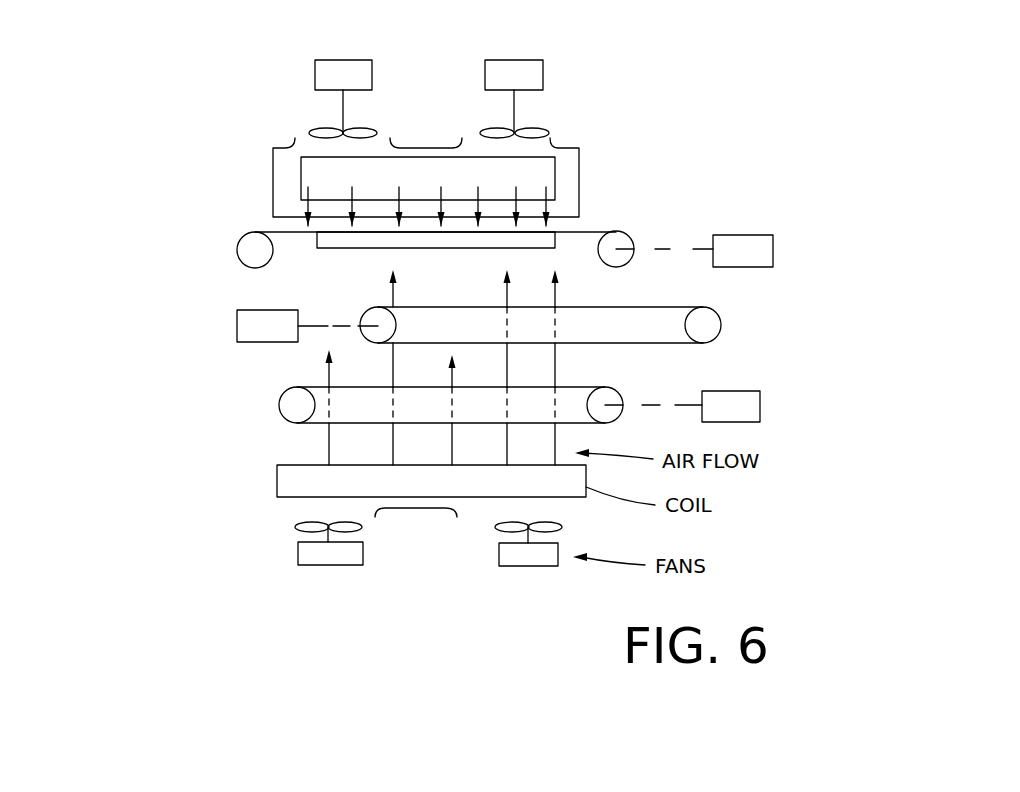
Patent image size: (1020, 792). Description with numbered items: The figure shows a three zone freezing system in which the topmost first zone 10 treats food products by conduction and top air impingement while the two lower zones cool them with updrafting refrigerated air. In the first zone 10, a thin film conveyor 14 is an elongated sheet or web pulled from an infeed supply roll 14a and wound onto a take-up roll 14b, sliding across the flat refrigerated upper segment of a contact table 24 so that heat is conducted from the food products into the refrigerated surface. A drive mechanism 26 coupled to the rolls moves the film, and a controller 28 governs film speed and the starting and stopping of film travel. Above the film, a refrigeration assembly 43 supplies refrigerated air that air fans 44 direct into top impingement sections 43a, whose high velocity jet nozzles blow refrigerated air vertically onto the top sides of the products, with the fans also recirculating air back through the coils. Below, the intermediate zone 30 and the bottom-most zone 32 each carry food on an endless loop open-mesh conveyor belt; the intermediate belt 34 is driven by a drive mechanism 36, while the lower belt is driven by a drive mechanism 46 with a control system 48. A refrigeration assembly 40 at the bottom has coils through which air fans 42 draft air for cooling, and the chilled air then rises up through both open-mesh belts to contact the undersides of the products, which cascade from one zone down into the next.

The first zone 10 is at (196, 246).
The thin film conveyor 14 is at (285, 223).
The infeed supply roll 14a is at (247, 236).
The take-up roll 14b is at (623, 233).
The contact table 24 is at (455, 240).
The drive mechanism 26 is at (673, 248).
The controller 28 is at (746, 243).
The intermediate zone 30 is at (442, 304).
The bottom-most zone 32 is at (461, 387).
The open-mesh conveyor belt 34 is at (677, 307).
The drive mechanism 36 is at (322, 325).
The refrigeration assembly 40 is at (287, 482).
The air fans 42 is at (348, 566).
The refrigeration assembly 43 is at (421, 148).
The top impingement sections 43a is at (502, 202).
The air fans 44 is at (351, 60).
The drive mechanism 46 is at (660, 405).
The control system 48 is at (750, 403).